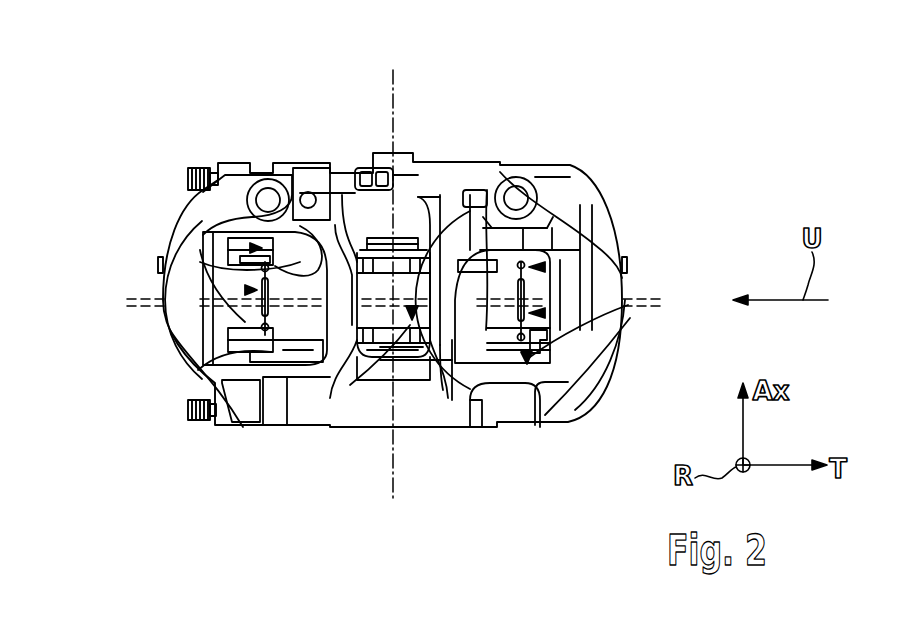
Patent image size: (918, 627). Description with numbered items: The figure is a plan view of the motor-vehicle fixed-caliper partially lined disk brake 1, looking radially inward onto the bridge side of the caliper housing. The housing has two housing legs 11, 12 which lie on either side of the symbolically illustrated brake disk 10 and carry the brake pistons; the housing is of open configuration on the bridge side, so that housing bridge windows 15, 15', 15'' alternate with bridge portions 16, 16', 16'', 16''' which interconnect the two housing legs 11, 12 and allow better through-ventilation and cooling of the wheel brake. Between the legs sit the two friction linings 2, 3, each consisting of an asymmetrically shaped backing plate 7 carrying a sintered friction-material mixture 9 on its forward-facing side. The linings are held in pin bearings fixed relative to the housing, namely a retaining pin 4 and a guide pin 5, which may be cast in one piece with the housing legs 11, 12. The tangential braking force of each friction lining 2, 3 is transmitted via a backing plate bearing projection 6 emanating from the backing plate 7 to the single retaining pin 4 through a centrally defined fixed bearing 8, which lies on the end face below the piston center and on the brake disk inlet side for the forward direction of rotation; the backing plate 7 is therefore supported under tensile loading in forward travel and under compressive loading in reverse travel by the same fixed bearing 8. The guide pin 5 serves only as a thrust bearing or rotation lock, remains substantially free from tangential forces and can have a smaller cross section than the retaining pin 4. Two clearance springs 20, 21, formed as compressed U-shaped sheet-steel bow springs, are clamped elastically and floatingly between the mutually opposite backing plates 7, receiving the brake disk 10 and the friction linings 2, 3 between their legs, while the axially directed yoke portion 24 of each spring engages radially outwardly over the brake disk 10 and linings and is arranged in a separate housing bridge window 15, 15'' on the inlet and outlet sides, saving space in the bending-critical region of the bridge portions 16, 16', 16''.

The motor-vehicle fixed-caliper partially lined disk brake 1 is at (238, 151).
The friction lining 2 is at (411, 312).
The friction lining 3 is at (351, 162).
The retaining pin 4 is at (548, 335).
The guide pin 5 is at (200, 262).
The backing plate bearing projection 6 is at (575, 410).
The backing plate 7 is at (258, 165).
The fixed bearing 8 is at (497, 383).
The sintered friction-material mixture 9 is at (530, 190).
The brake disk 10 is at (127, 299).
The housing leg 11 is at (428, 185).
The housing leg 12 is at (430, 417).
The housing bridge window 15 is at (502, 369).
The housing bridge window 15' is at (378, 423).
The housing bridge window 15'' is at (226, 239).
The bridge portion 16 is at (545, 290).
The bridge portion 16' is at (483, 214).
The bridge portion 16'' is at (337, 407).
The contour arc 16''' is at (154, 242).
The clearance spring 20 is at (546, 314).
The clearance spring 21 is at (238, 263).
The yoke portion 24 is at (245, 290).